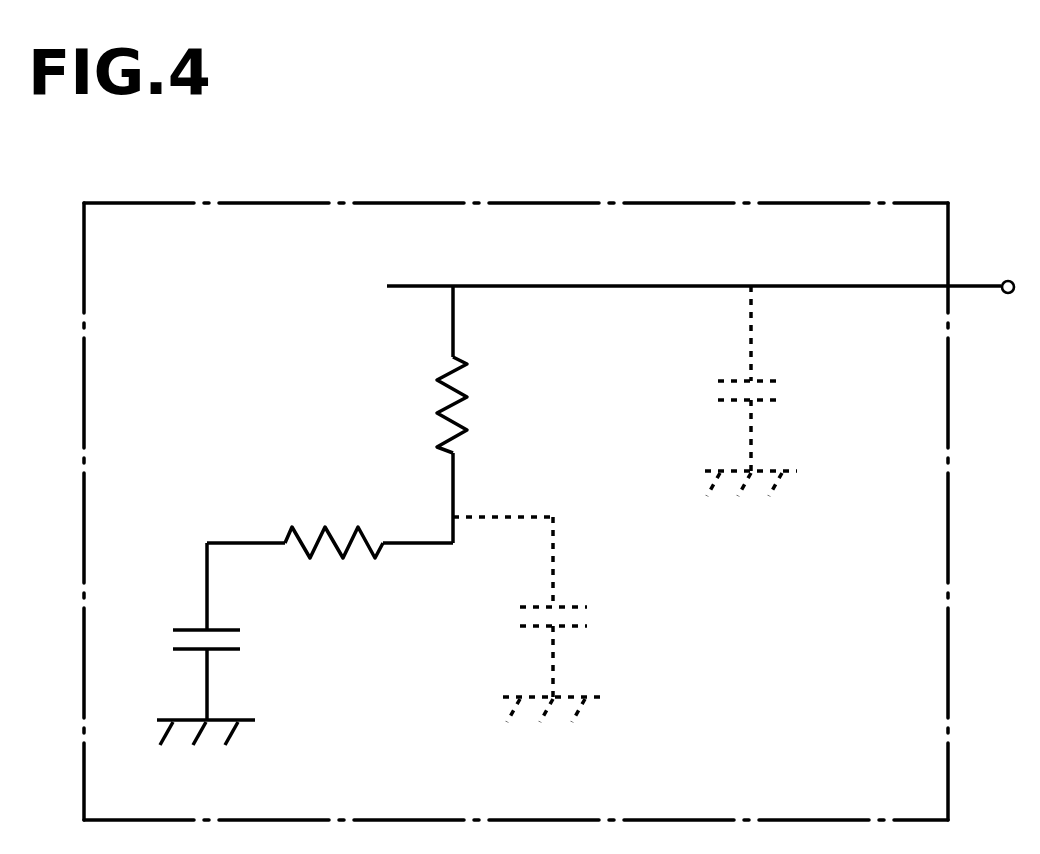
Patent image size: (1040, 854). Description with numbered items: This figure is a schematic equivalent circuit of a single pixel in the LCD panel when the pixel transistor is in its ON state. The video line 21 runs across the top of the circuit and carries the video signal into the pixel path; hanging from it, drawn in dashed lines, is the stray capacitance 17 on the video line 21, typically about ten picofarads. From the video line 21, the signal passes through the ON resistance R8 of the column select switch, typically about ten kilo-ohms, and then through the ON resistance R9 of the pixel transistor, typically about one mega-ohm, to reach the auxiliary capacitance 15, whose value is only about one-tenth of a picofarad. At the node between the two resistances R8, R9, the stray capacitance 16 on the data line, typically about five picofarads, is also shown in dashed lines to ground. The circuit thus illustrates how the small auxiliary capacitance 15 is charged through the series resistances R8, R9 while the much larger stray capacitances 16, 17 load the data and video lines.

The video line 21 is at (579, 286).
The ON resistance of the column select switch R8 is at (419, 414).
The ON resistance of the pixel transistor TFT R9 is at (330, 521).
The auxiliary capacitance 15 is at (253, 643).
The stray capacitance on the data line 16 is at (578, 592).
The stray capacitance on the video line 17 is at (770, 372).